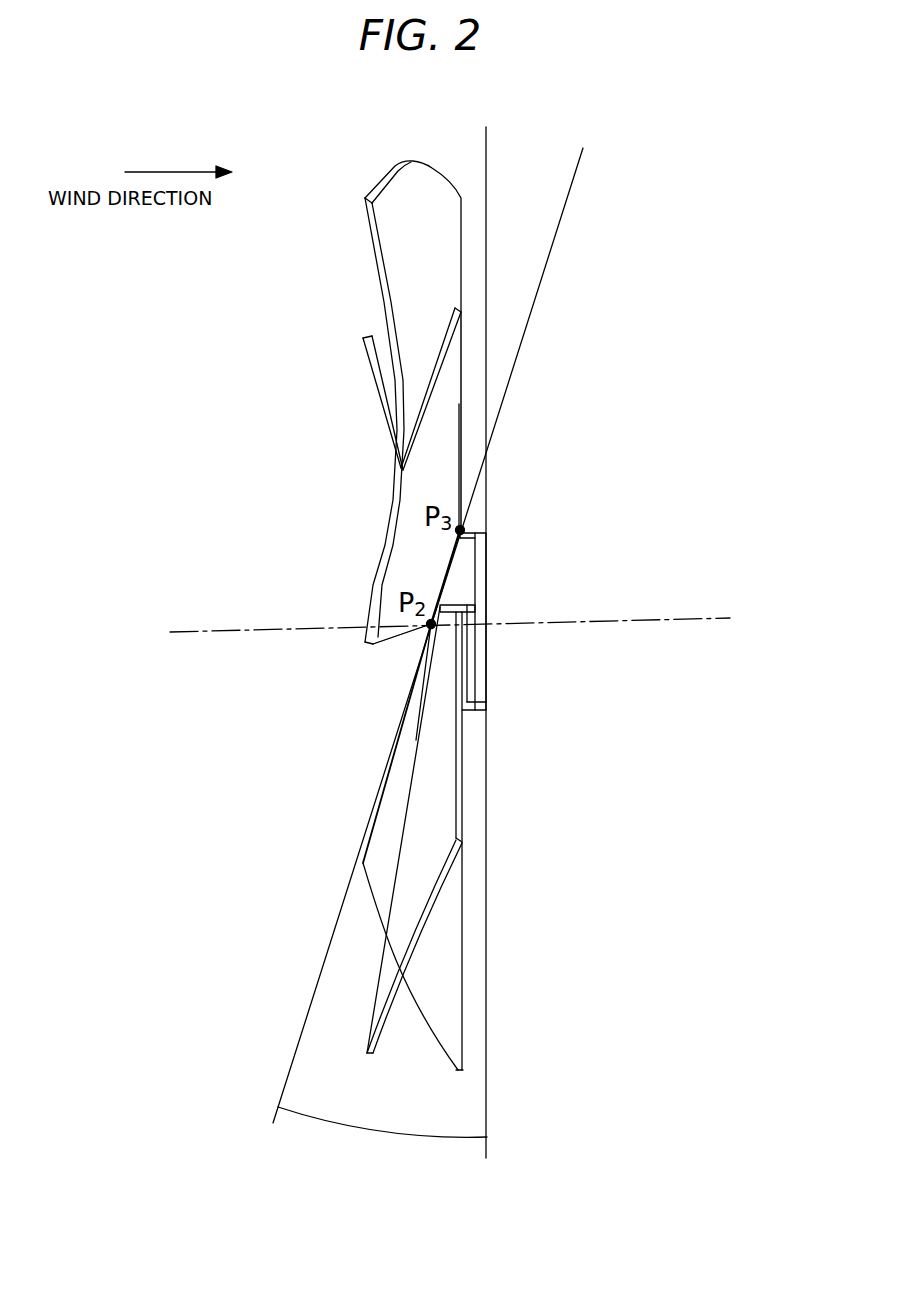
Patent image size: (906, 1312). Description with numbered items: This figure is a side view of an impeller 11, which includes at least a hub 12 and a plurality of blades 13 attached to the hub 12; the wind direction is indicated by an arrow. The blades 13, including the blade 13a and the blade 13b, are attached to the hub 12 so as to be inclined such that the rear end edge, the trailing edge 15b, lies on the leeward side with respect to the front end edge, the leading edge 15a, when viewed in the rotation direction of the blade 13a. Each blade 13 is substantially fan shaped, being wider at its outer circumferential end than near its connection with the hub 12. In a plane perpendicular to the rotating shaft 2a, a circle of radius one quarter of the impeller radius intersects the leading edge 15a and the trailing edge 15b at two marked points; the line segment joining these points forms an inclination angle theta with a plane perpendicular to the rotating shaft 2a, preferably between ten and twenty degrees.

The impeller 11 is at (188, 813).
The rotating shaft 2a is at (472, 617).
The hub 12 is at (480, 548).
The blades 13 is at (357, 615).
The blade 13a is at (386, 785).
The upper blade portion 13b is at (407, 302).
The leading edge 15a is at (391, 645).
The trailing edge 15b is at (462, 380).